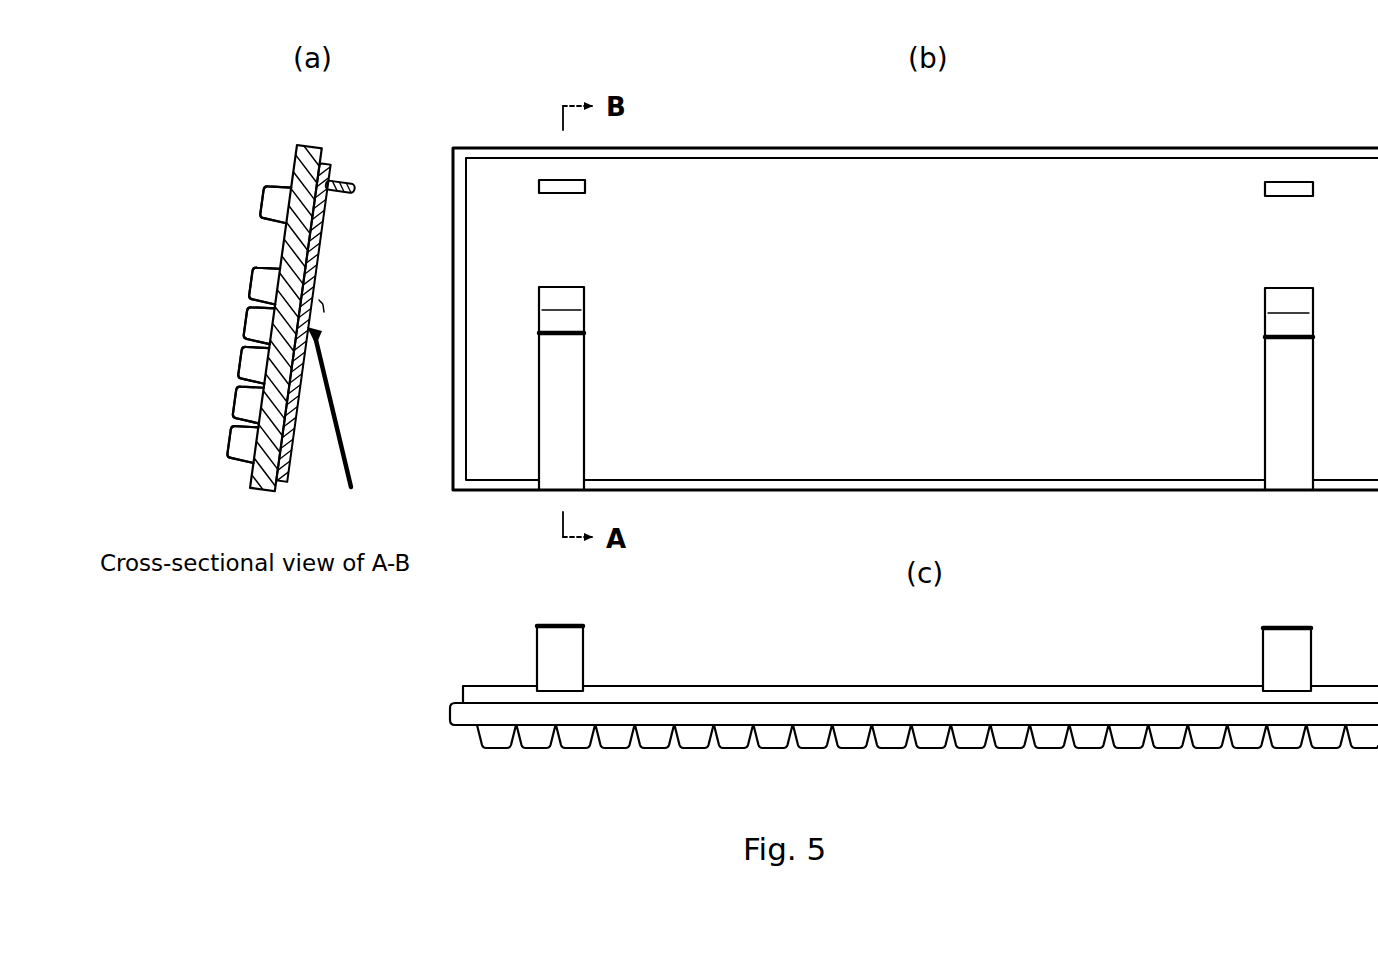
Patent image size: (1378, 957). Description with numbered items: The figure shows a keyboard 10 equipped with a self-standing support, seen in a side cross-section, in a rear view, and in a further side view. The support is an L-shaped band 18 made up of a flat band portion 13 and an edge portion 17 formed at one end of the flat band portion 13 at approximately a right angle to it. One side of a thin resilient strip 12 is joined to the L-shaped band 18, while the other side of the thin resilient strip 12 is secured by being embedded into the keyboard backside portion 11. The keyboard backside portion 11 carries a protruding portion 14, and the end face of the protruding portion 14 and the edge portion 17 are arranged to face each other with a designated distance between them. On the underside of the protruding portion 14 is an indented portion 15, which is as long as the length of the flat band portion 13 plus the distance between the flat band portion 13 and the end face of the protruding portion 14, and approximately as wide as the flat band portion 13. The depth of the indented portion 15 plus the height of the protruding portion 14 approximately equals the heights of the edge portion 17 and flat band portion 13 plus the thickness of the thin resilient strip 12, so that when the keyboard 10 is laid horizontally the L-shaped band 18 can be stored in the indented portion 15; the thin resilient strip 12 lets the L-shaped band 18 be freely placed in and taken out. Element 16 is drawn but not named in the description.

The keyboard 10 is at (356, 134).
The keyboard backside portion 11 is at (808, 172).
The thin resilient strip 12 is at (317, 310).
The flat band portion 13 is at (332, 393).
The protruding portion 14 is at (322, 312).
The indented portion 15 is at (297, 462).
The terminal pin 16 is at (346, 186).
The edge portion 17 is at (318, 336).
The L-shaped band 18 is at (360, 435).